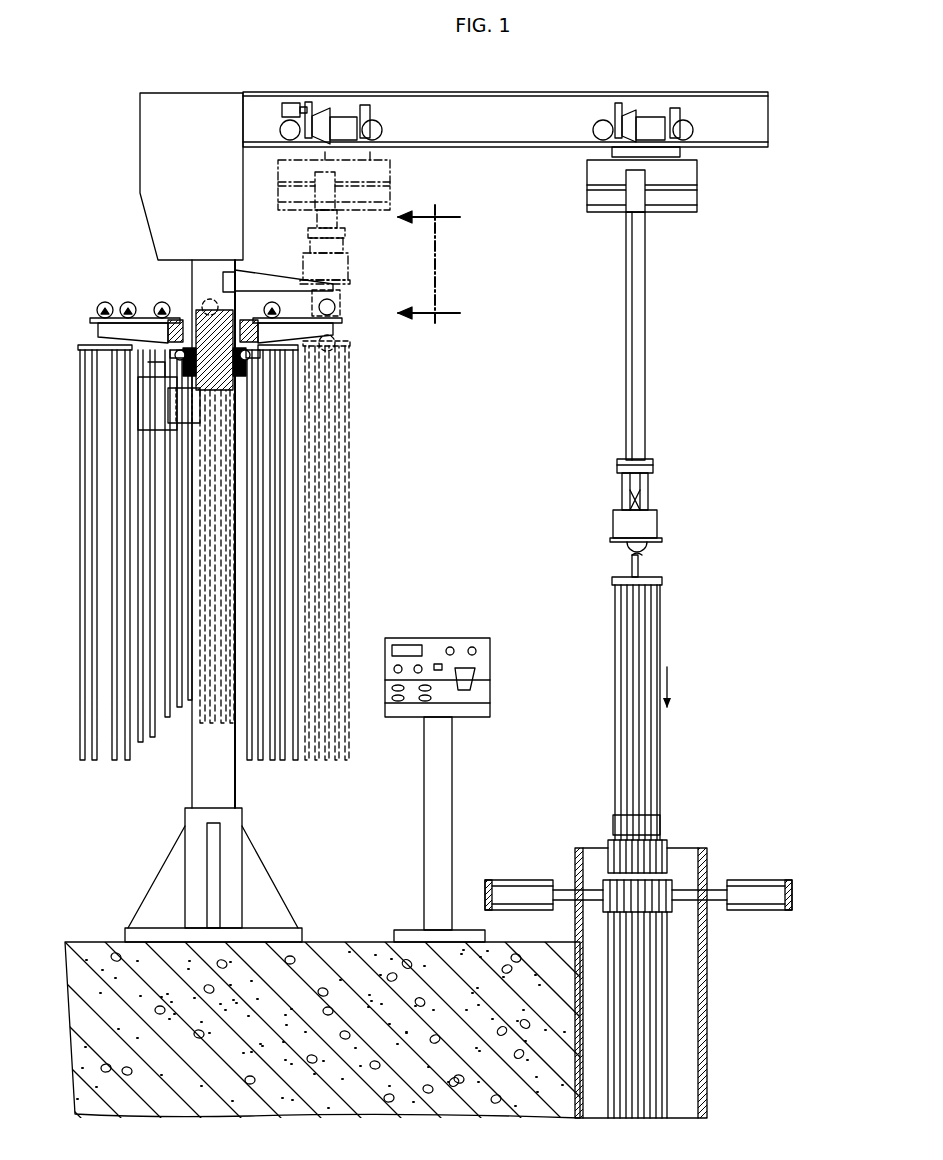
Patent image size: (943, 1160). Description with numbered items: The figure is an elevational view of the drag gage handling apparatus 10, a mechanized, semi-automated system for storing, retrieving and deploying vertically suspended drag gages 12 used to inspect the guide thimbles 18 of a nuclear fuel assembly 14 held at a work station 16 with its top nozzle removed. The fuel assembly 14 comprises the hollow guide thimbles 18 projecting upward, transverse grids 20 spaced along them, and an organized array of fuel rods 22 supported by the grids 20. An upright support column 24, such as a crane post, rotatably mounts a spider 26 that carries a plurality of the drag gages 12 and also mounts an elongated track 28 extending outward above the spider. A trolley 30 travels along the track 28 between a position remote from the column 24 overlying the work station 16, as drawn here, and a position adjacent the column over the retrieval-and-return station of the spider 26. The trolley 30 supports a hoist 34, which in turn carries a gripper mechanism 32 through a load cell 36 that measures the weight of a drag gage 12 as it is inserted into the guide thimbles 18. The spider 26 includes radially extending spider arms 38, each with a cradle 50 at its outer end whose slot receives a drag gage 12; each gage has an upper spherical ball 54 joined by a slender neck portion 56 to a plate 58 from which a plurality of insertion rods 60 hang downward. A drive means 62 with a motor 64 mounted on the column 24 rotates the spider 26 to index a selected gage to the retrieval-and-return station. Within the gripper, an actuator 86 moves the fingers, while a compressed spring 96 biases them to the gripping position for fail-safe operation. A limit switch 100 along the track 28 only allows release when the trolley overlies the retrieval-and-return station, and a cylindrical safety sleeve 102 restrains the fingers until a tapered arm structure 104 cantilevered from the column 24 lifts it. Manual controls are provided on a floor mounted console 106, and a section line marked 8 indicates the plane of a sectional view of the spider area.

The drag gage handling apparatus 10 is at (479, 90).
The drag gage 12 is at (673, 581).
The nuclear fuel assembly 14 is at (702, 845).
The work station 16 is at (707, 858).
The guide thimbles 18 is at (613, 819).
The transverse grids 20 is at (666, 920).
The fuel rods 22 is at (648, 1012).
The upright support column 24 is at (192, 783).
The spider 26 is at (93, 325).
The track 28 is at (578, 93).
The trolley 30 is at (395, 126).
The gripper mechanism 32 is at (345, 302).
The hoist 34 is at (648, 366).
The load cell 36 is at (655, 462).
The spider arms 38 is at (147, 325).
The cradle 50 is at (96, 307).
The spherical ball 54 is at (108, 300).
The neck portion 56 is at (631, 565).
The plate 58 is at (612, 580).
The insertion rods 60 is at (90, 497).
The drive means 62 is at (125, 384).
The motor 64 is at (138, 413).
The actuator 86 is at (646, 482).
The compressed spring 96 is at (643, 501).
The limit switch 100 is at (290, 103).
The cylindrical sleeve 102 is at (658, 523).
The tapered arm structure 104 is at (271, 273).
The console 106 is at (491, 693).
The section line 8- 8 is at (437, 264).